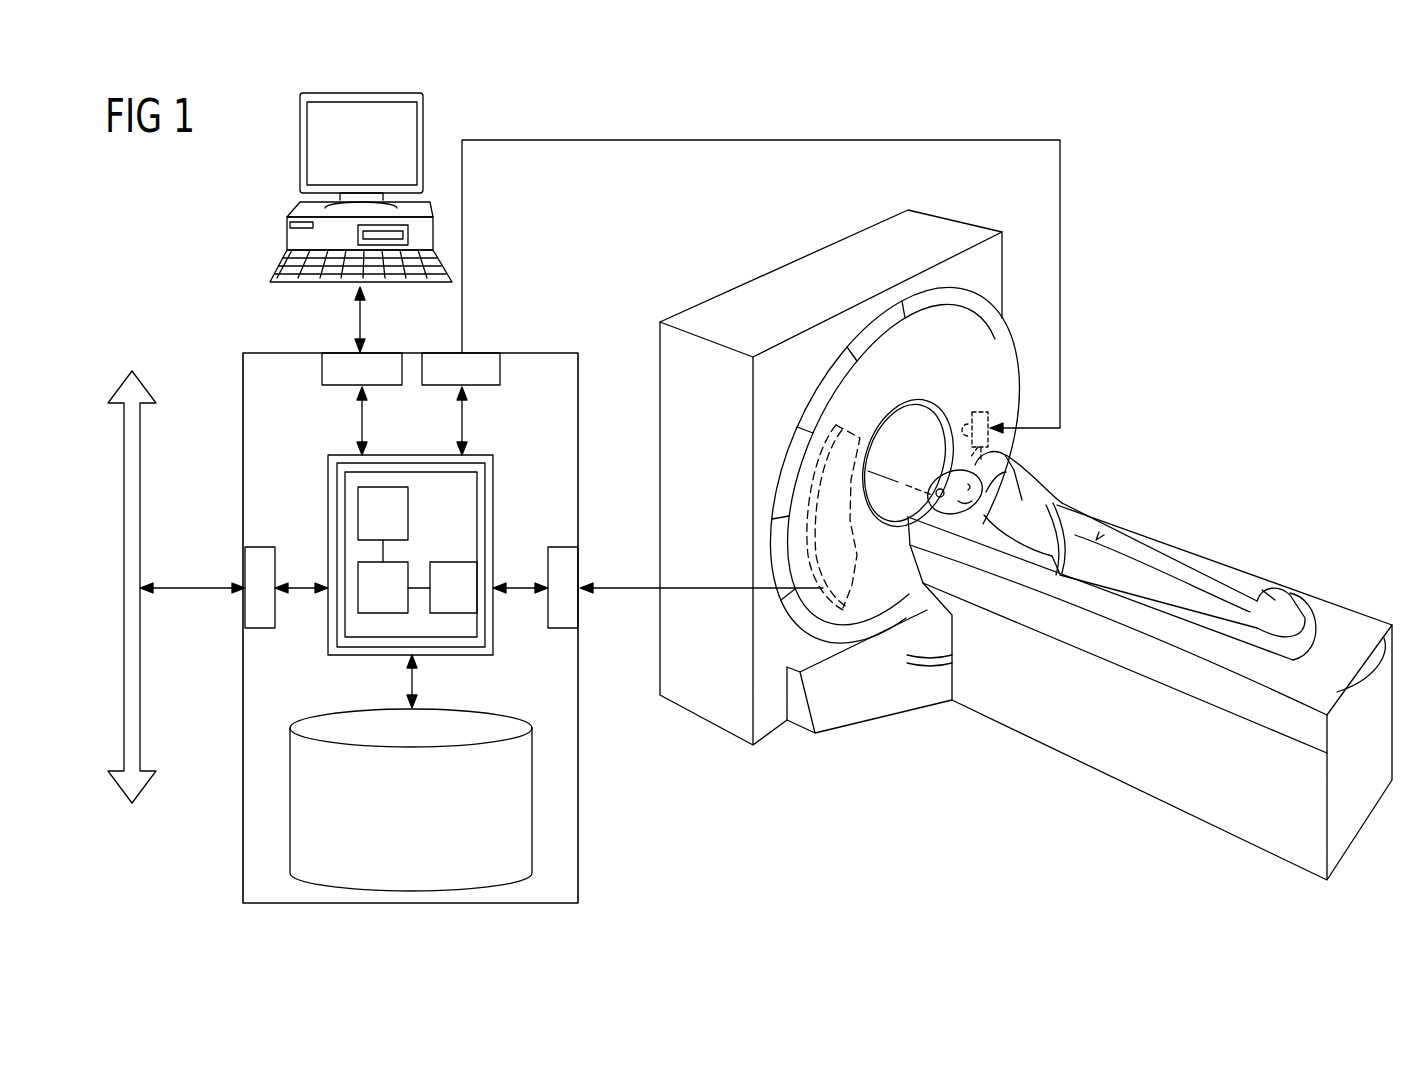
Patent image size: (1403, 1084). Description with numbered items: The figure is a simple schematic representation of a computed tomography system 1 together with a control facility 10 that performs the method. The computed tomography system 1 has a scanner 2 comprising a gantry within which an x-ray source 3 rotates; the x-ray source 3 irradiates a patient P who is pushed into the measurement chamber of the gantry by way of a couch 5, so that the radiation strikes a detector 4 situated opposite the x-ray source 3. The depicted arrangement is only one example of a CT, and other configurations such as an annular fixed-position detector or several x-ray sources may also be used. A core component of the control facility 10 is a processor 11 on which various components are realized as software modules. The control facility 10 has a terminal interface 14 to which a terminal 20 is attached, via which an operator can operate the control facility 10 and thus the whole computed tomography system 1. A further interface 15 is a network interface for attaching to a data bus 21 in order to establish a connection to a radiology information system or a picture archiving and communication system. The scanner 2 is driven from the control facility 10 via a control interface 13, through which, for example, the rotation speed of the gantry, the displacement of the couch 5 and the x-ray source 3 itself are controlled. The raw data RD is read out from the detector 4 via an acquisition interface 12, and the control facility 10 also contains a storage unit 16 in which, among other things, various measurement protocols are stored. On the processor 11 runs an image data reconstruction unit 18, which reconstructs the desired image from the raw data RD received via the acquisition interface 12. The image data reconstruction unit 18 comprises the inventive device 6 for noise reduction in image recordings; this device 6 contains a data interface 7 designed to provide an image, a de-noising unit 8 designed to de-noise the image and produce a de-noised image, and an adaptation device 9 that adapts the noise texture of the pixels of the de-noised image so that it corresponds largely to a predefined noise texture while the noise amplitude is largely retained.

The computed tomography system 1 is at (1243, 323).
The scanner 2 is at (795, 273).
The x-ray source 3 is at (979, 410).
The detector 4 is at (853, 577).
The couch 5 is at (1129, 773).
The patient P is at (1035, 498).
The raw data RD is at (640, 586).
The device for noise reduction 6 is at (480, 487).
The data interface 7 is at (446, 565).
The de-noising unit 8 is at (383, 613).
The adaptation device 9 is at (408, 497).
The control facility 10 is at (560, 353).
The processor 11 is at (405, 455).
The acquisition interface 12 is at (562, 553).
The control interface 13 is at (500, 368).
The terminal interface 14 is at (322, 368).
The network interface 15 is at (260, 553).
The storage unit 16 is at (506, 713).
The image data reconstruction unit 18 is at (478, 463).
The terminal 20 is at (300, 145).
The data bus 21 is at (144, 506).